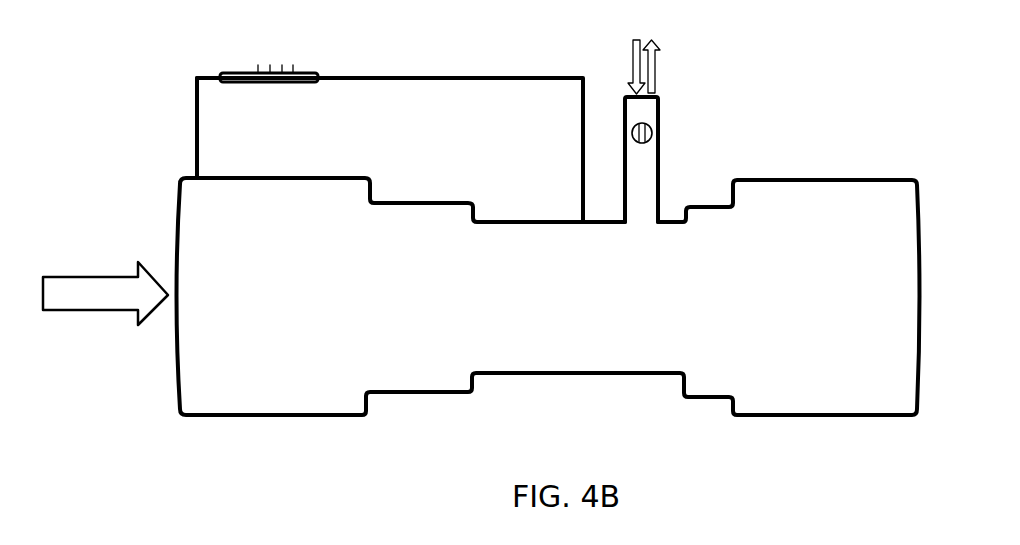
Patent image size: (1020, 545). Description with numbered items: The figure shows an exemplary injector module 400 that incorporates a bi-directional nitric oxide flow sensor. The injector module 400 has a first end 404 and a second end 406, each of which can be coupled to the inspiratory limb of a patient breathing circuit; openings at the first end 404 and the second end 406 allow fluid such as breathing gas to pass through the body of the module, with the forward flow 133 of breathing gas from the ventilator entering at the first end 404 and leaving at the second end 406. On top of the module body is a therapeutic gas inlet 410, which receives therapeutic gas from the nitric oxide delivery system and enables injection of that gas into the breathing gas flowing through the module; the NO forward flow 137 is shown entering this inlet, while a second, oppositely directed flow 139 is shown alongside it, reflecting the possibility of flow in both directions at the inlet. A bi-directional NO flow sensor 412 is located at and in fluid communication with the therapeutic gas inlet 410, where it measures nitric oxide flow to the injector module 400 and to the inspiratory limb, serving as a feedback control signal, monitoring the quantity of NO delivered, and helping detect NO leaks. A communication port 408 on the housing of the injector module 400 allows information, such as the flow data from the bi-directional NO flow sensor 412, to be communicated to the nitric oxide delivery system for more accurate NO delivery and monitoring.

The forward flow 133 is at (85, 277).
The NO forward flow 137 is at (632, 62).
The return signal 139 is at (660, 62).
The injector module 400 is at (192, 60).
The first end 404 is at (197, 176).
The second end 406 is at (793, 178).
The communication port 408 is at (283, 58).
The therapeutic gas inlet 410 is at (631, 110).
The bi-directional NO flow sensor 412 is at (656, 124).